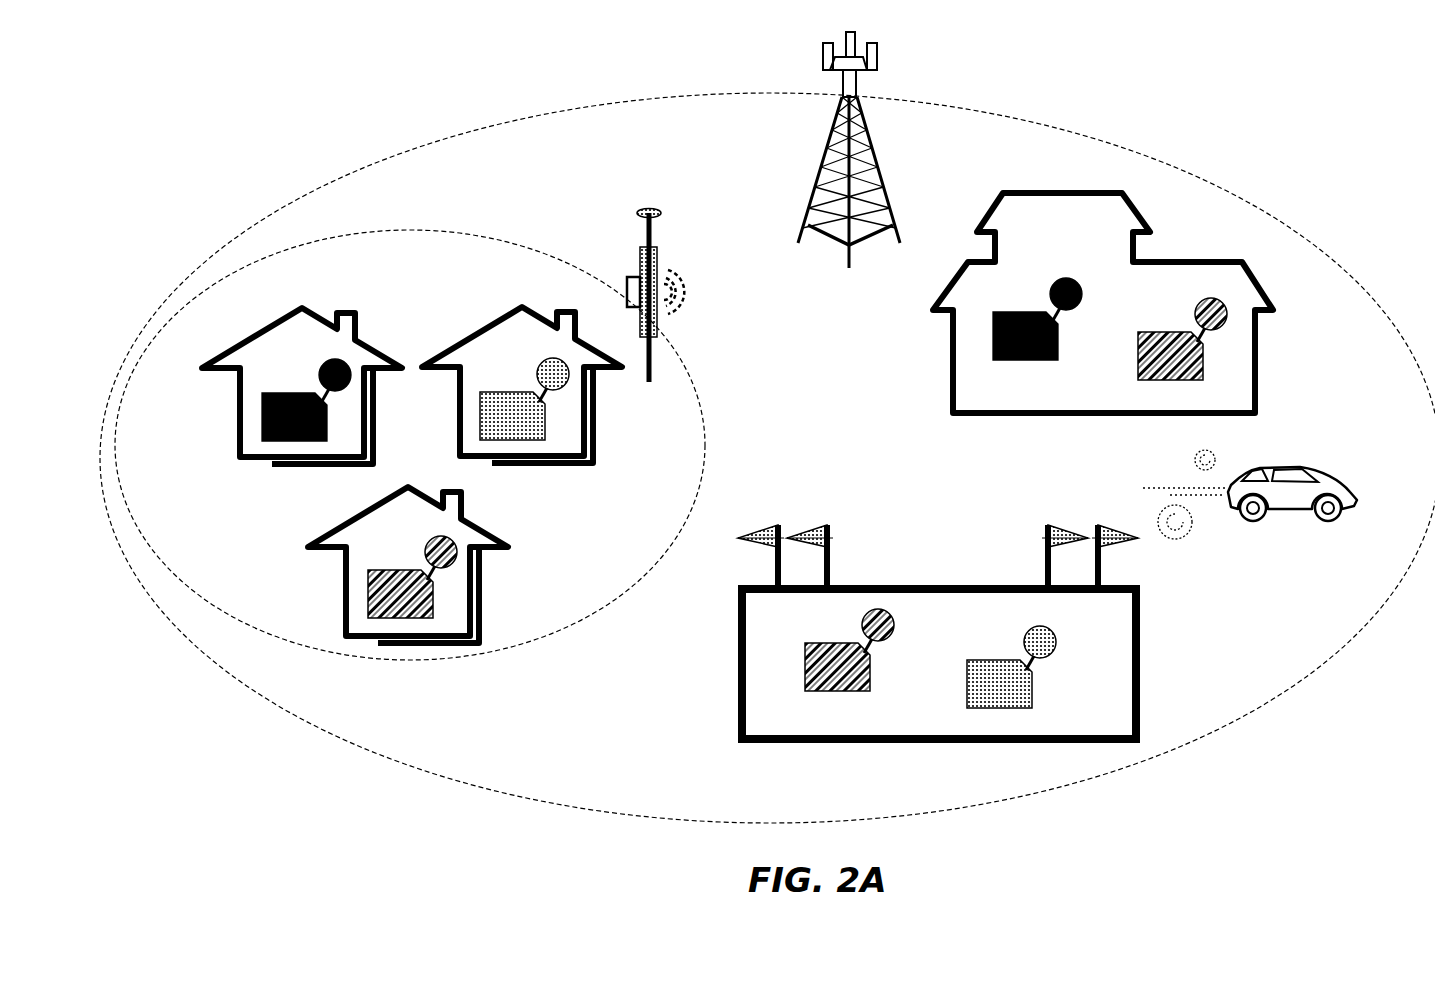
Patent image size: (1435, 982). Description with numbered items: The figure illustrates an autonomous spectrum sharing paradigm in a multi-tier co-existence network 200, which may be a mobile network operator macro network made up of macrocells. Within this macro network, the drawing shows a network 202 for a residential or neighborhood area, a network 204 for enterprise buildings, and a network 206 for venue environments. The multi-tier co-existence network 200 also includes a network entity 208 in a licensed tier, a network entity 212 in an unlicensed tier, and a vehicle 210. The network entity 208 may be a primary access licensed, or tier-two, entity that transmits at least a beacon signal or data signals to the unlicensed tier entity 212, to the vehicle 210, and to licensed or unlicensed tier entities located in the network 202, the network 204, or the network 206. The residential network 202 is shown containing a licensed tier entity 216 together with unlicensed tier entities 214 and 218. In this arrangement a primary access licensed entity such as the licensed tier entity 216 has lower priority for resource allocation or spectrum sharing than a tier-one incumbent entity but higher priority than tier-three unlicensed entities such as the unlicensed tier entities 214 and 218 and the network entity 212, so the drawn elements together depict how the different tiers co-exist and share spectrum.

The multi-tier co-existence network 200 is at (358, 84).
The network for residential/neighborhood area 202 is at (705, 451).
The network for enterprise buildings 204 is at (1053, 193).
The network for venue environments 206 is at (910, 585).
The network entity in a licensed tier 208 is at (878, 174).
The vehicle 210 is at (1280, 467).
The network entity in an unlicensed tier 212 is at (650, 206).
The unlicensed tier entity 214 is at (293, 392).
The licensed tier entity 216 is at (405, 568).
The unlicensed tier entity 218 is at (519, 391).